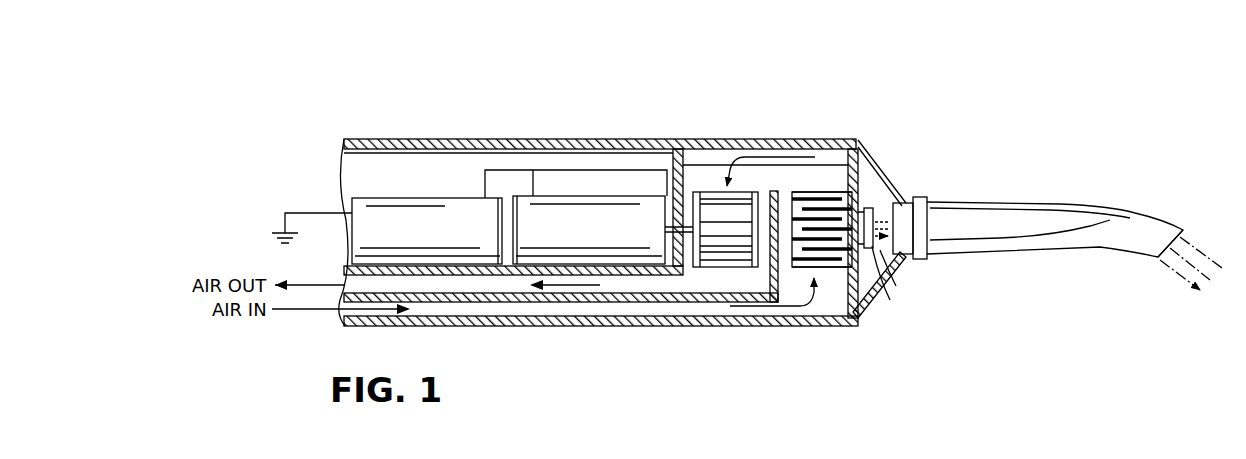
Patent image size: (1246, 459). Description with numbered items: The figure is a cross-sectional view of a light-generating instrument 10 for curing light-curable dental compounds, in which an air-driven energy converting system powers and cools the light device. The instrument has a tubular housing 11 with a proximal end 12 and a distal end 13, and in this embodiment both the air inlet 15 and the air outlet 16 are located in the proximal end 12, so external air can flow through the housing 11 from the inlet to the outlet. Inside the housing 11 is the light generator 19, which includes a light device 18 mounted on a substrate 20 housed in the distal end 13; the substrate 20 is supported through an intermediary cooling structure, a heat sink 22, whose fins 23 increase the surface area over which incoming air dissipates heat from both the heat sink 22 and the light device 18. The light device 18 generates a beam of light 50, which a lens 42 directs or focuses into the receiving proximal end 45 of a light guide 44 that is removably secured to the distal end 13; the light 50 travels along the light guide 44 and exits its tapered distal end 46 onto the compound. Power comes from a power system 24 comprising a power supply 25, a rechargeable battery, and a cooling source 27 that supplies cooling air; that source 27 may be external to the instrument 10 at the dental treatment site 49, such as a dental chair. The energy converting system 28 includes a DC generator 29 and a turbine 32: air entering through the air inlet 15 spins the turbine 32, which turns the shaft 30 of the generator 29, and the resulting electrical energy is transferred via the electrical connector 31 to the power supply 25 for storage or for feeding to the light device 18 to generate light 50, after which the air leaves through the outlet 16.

The light-generating instrument 10 is at (968, 72).
The housing 11 is at (451, 138).
The proximal end 12 is at (352, 138).
The distal end 13 is at (846, 140).
The air inlet 15 is at (345, 320).
The air outlet 16 is at (344, 271).
The light device 18 is at (876, 296).
The light generator 19 is at (881, 207).
The substrate 20 is at (868, 206).
The heat sink 22 is at (828, 268).
The fins 23 is at (840, 268).
The power system 24 is at (415, 177).
The power supply 25 is at (386, 237).
The cooling source 27 is at (773, 302).
The energy converting system 28 is at (600, 170).
The DC generator 29 is at (549, 237).
The shaft 30 is at (665, 219).
The electrical connector 31 is at (488, 190).
The turbine 32 is at (720, 267).
The lens 42 is at (905, 200).
The light guide 44 is at (1042, 201).
The proximal end 45 is at (947, 198).
The distal end 46 is at (1162, 216).
The dental treatment site 49 is at (274, 228).
The beam of light 50 is at (1168, 278).